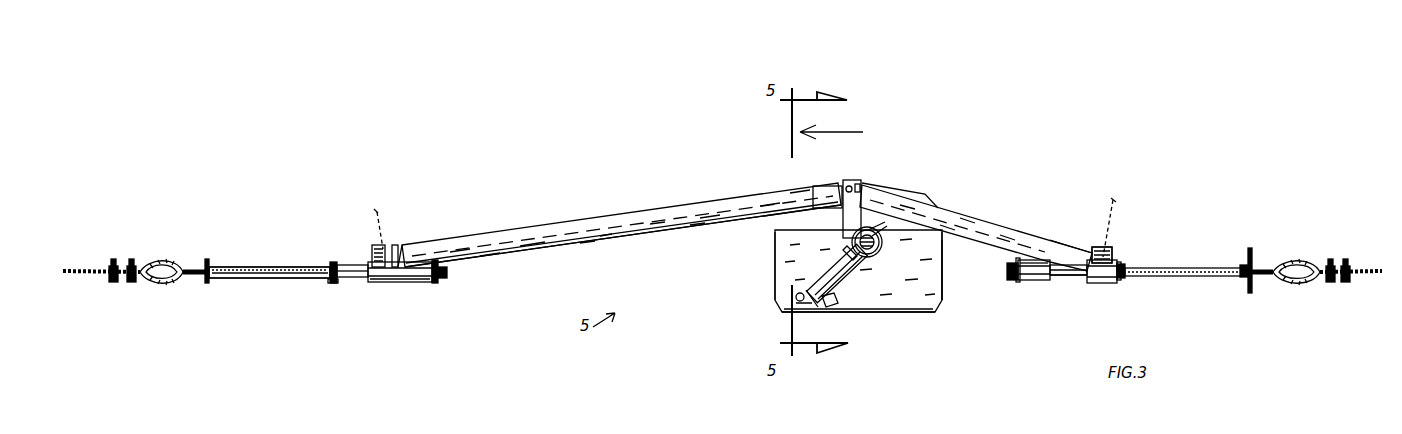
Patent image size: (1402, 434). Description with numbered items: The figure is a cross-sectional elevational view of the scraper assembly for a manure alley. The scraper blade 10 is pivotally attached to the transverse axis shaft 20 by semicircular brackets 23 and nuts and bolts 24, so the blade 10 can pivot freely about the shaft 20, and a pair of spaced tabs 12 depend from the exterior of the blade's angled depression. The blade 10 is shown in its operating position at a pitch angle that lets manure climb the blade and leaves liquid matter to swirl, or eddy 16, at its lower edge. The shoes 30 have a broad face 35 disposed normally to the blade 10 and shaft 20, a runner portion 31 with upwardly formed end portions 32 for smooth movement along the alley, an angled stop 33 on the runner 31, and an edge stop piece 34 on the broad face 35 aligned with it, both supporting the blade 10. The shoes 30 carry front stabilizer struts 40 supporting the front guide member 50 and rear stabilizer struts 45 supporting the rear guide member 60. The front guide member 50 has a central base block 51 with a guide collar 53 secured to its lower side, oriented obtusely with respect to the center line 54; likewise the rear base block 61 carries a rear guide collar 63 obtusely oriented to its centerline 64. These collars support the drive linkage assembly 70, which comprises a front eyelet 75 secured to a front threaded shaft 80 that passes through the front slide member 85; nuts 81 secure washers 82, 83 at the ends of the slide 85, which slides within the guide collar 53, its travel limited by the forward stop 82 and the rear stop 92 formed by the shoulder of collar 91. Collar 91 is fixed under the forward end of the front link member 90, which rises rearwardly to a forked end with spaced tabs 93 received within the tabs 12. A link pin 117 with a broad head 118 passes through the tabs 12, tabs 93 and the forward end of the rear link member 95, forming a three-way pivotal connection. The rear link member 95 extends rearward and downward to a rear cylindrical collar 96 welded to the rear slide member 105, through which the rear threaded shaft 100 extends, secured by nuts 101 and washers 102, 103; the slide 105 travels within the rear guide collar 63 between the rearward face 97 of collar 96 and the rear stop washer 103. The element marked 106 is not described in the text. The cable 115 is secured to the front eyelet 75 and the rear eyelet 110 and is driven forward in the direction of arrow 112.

The scraper blade 10 is at (835, 272).
The spaced tabs 12 is at (840, 222).
The eddy 16 is at (790, 315).
The transverse axis shaft 20 is at (878, 248).
The semicircular brackets 23 is at (882, 245).
The nuts and bolts 24 is at (850, 255).
The shoes 30 is at (770, 254).
The runner portion 31 is at (893, 312).
The upwardly formed end portions 32 is at (785, 300).
The angled stop 33 is at (838, 305).
The edge stop piece 34 is at (850, 288).
The broad face 35 is at (927, 290).
The front stabilizer struts 40 is at (713, 228).
The rear stabilizer struts 45 is at (1067, 242).
The front guide member 50 is at (370, 255).
The central base block 51 is at (388, 255).
The guide collar 53 is at (382, 283).
The center line 54 is at (378, 212).
The rear guide member 60 is at (1117, 252).
The base block 61 is at (1108, 252).
The rear guide collar 63 is at (1100, 283).
The centerline 64 is at (1116, 200).
The drive linkage assembly 70 is at (310, 290).
The front eyelet 75 is at (197, 266).
The front threaded shaft 80 is at (233, 268).
The nuts 81 is at (330, 266).
The washer (forward stop) 82 is at (330, 283).
The washer 83 is at (436, 281).
The front slide member 85 is at (355, 280).
The front link member 90 is at (615, 215).
The collar 91 is at (420, 283).
The rear stop 92 is at (400, 268).
The spaced tabs 93 is at (818, 187).
The rear link member 95 is at (993, 248).
The rear cylindrical collar 96 is at (1035, 267).
The rearward face (forward stop) 97 is at (1060, 277).
The rear threaded shaft 100 is at (1195, 265).
The nuts 101 is at (1007, 280).
The washer 102 is at (1018, 280).
The rear washer (rear stop) 103 is at (1117, 280).
The rear slide member 105 is at (1068, 280).
The sleeve 106 is at (1037, 280).
The rear eyelet 110 is at (1278, 262).
The arrow 112 is at (840, 132).
The cable 115 is at (78, 270).
The link pin 117 is at (853, 184).
The broad head 118 is at (848, 186).